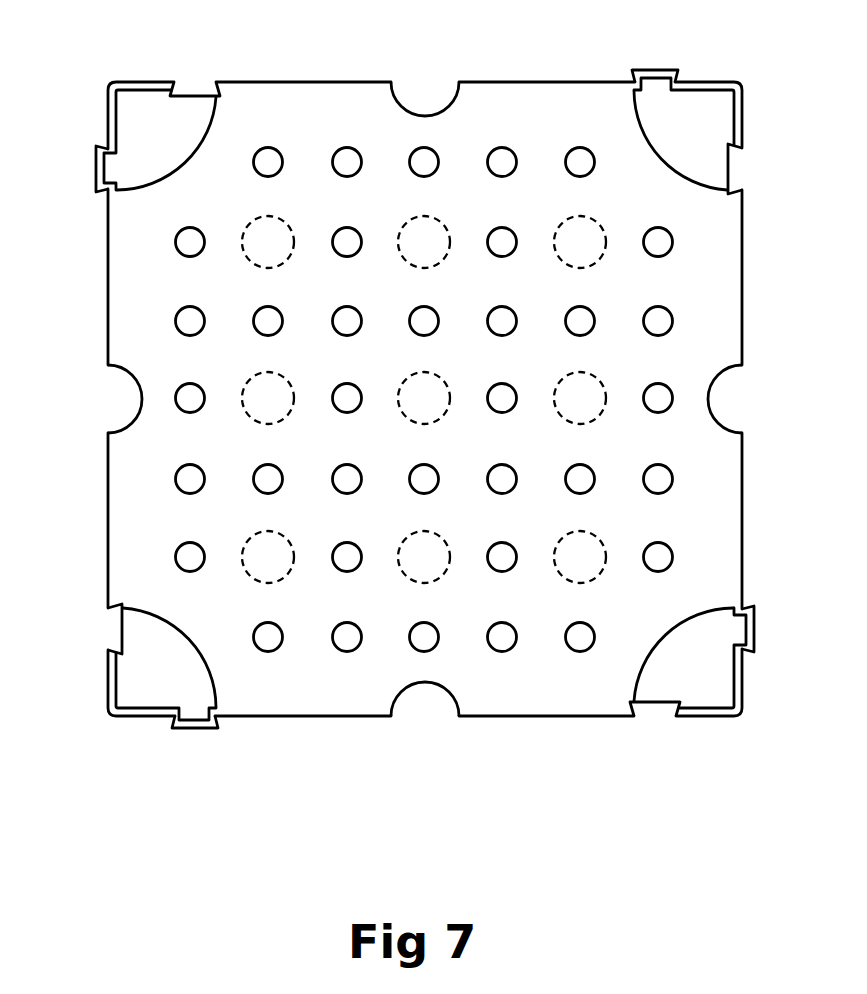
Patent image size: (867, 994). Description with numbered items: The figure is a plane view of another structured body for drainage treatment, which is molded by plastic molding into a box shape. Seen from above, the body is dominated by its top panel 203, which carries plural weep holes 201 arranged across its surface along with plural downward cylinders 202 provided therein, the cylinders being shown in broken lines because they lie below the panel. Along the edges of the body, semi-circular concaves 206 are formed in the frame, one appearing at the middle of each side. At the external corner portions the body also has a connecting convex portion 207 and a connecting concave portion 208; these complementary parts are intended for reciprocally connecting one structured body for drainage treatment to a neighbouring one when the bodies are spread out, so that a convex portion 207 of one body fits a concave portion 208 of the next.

The weep holes 201 is at (350, 148).
The downward cylinders 202 is at (282, 217).
The top panel 203 is at (488, 117).
The semi-circular concaves 206 is at (428, 115).
The connecting convex portion 207 is at (656, 68).
The connecting concave portion 208 is at (192, 82).